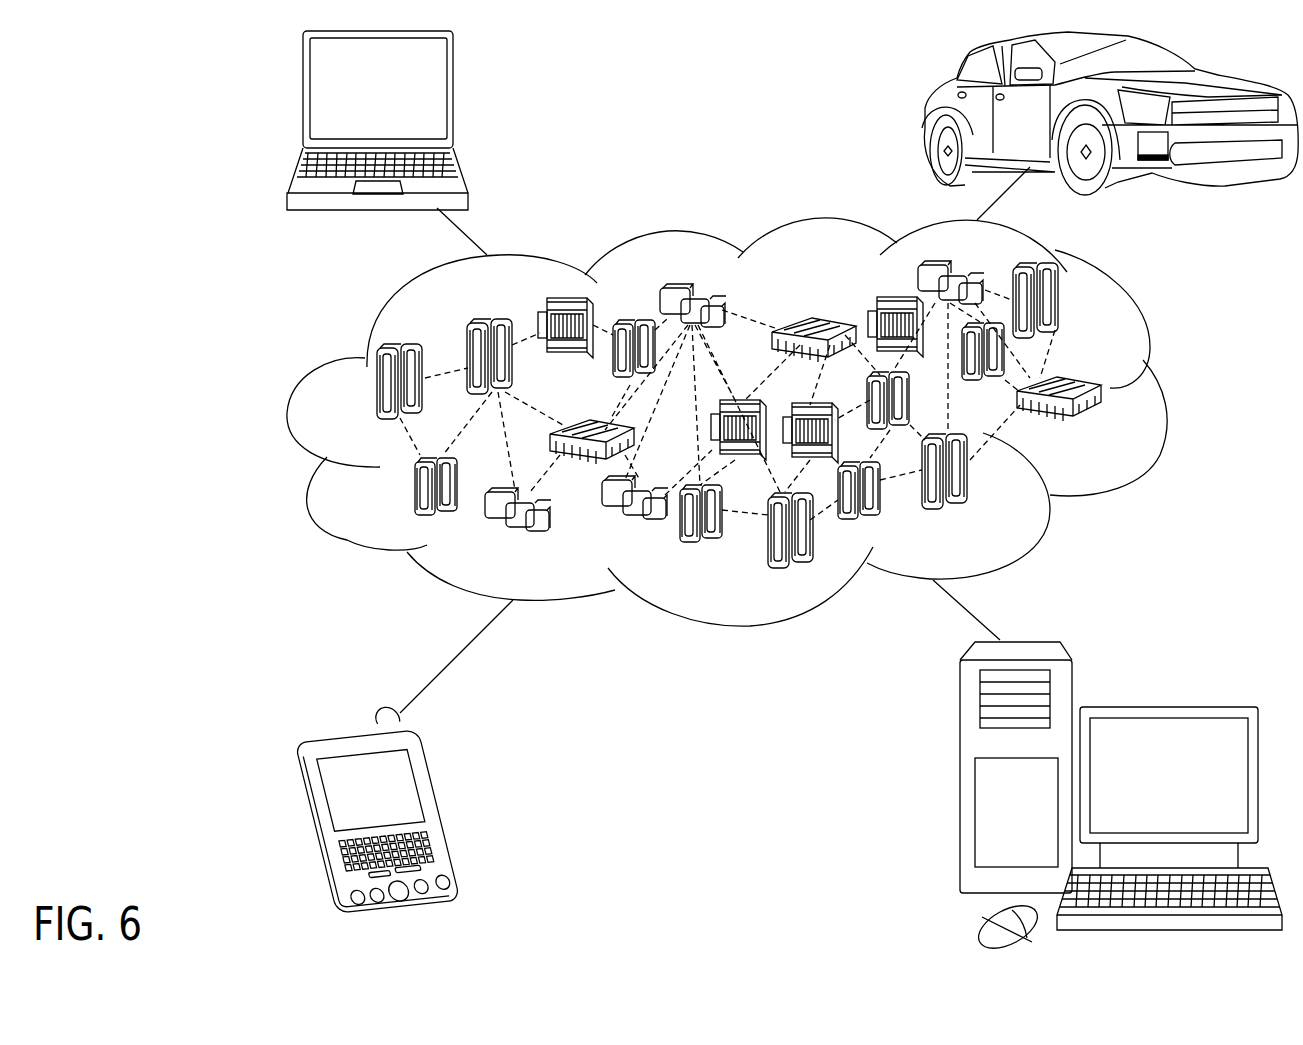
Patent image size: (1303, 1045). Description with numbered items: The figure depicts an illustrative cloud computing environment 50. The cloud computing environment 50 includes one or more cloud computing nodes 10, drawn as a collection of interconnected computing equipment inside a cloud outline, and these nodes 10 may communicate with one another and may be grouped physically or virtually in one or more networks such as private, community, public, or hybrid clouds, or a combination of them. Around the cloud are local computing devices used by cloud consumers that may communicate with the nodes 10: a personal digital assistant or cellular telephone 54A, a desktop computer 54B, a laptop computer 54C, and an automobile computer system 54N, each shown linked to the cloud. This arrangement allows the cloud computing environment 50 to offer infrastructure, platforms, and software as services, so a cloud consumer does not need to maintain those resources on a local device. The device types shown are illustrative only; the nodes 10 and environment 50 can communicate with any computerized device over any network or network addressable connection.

The cloud computing node 10 is at (1100, 425).
The cloud computing environment 50 is at (1165, 395).
The personal digital assistant (PDA) or cellular telephone 54A is at (445, 806).
The desktop computer 54B is at (1160, 707).
The laptop computer 54C is at (456, 97).
The automobile computer system 54N is at (925, 115).